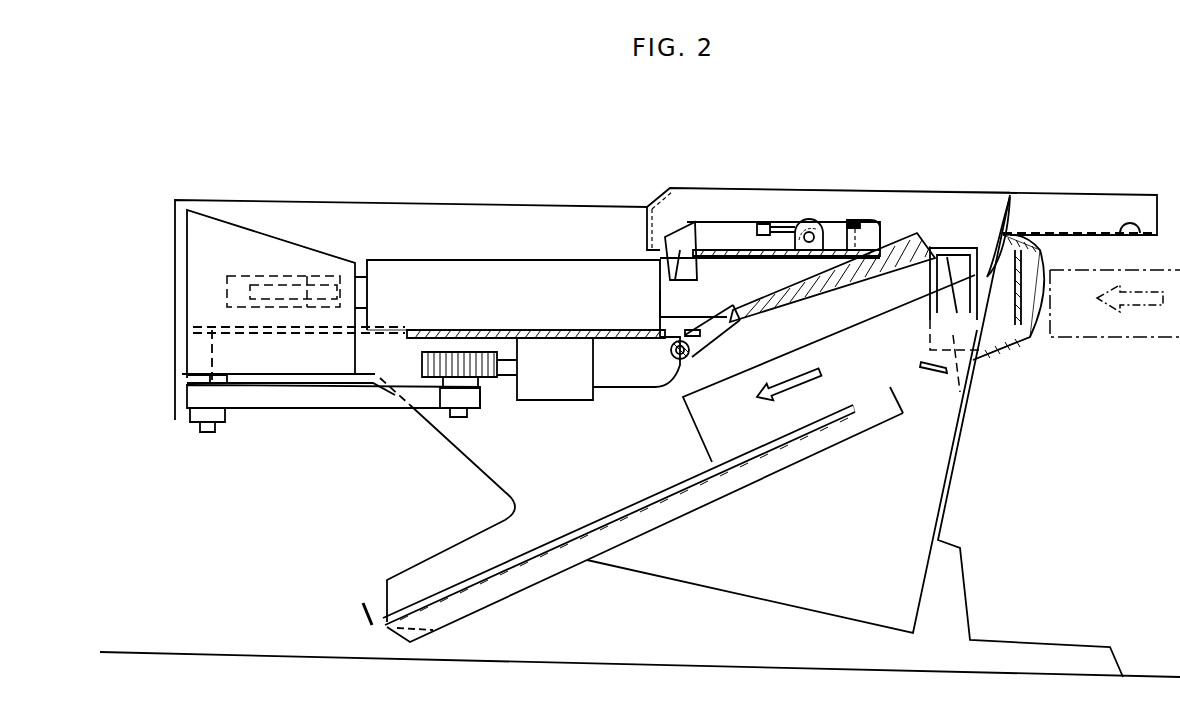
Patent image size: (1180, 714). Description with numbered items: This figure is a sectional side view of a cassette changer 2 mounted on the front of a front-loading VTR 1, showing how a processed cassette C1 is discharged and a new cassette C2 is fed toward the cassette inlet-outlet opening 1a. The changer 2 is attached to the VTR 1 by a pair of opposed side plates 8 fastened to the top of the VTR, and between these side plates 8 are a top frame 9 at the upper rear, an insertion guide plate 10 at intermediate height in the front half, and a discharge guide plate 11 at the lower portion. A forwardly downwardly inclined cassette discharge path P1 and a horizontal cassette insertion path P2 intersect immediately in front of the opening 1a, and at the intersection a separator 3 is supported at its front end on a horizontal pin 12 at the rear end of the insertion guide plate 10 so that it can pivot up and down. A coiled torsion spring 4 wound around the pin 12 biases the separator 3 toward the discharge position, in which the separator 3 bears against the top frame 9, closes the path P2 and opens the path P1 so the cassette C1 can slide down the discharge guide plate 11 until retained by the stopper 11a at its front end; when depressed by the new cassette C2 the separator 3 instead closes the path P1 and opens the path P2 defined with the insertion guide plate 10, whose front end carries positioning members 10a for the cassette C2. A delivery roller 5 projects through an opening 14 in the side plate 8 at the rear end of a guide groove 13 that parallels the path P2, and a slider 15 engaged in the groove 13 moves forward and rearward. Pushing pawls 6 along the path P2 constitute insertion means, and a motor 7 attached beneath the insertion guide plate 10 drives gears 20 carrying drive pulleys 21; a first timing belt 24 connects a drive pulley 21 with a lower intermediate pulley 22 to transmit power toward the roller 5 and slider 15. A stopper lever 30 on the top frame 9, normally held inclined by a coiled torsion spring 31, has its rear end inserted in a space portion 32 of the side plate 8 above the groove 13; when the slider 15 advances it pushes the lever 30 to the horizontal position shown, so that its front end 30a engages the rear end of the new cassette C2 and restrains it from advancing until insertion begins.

The VTR 1 is at (1106, 432).
The cassette inlet-outlet opening 1a is at (1010, 197).
The cassette changer 2 is at (636, 421).
The separator 3 is at (772, 305).
The coiled torsion spring 4 is at (695, 358).
The delivery roller 5 is at (947, 278).
The pushing pawl 6 is at (290, 280).
The motor 7 is at (553, 400).
The side plate 8 is at (780, 198).
The top frame 9 is at (638, 258).
The insertion guide plate 10 is at (637, 338).
The positioning member 10a is at (248, 229).
The discharge guide plate 11 is at (613, 507).
The stopper 11a is at (363, 618).
The horizontal pin 12 is at (678, 362).
The guide groove 13 is at (833, 295).
The opening 14 is at (950, 365).
The slider 15 is at (240, 278).
The gear 20 is at (422, 360).
The drive pulley 21 is at (475, 408).
The lower intermediate pulley 22 is at (227, 407).
The first timing belt 24 is at (330, 395).
The stopper lever 30 is at (715, 229).
The front end of stopper lever 30a is at (684, 262).
The coiled torsion spring 31 is at (800, 225).
The space portion 32 is at (858, 228).
The processed cassette C1 is at (847, 408).
The new cassette C2 is at (473, 267).
The cassette discharge path P1 is at (670, 460).
The horizontal cassette insertion path P2 is at (580, 240).